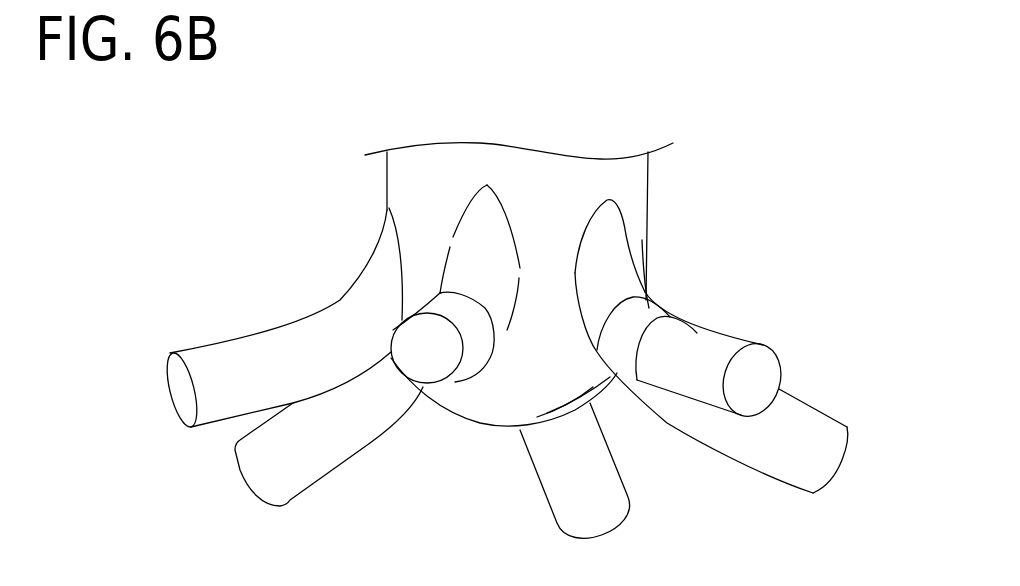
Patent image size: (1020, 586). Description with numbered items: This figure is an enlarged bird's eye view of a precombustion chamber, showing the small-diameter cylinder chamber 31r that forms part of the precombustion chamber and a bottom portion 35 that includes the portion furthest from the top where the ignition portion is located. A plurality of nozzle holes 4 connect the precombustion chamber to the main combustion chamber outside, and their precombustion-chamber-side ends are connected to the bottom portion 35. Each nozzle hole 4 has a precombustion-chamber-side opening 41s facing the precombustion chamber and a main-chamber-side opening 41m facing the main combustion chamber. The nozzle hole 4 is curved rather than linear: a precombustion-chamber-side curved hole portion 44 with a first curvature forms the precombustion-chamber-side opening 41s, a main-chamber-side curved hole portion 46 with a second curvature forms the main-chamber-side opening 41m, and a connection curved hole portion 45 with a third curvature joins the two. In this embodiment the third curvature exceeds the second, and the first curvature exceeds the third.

The small-diameter cylinder chamber 31r is at (388, 173).
The bottom portion 35 is at (510, 423).
The nozzle hole 4 is at (735, 339).
The precombustion-chamber-side opening 41s is at (613, 222).
The precombustion-chamber-side curved hole portion 44 is at (620, 262).
The connection curved hole portion 45 is at (648, 308).
The main-chamber-side curved hole portion 46 is at (698, 340).
The main-chamber-side opening 41m is at (781, 368).